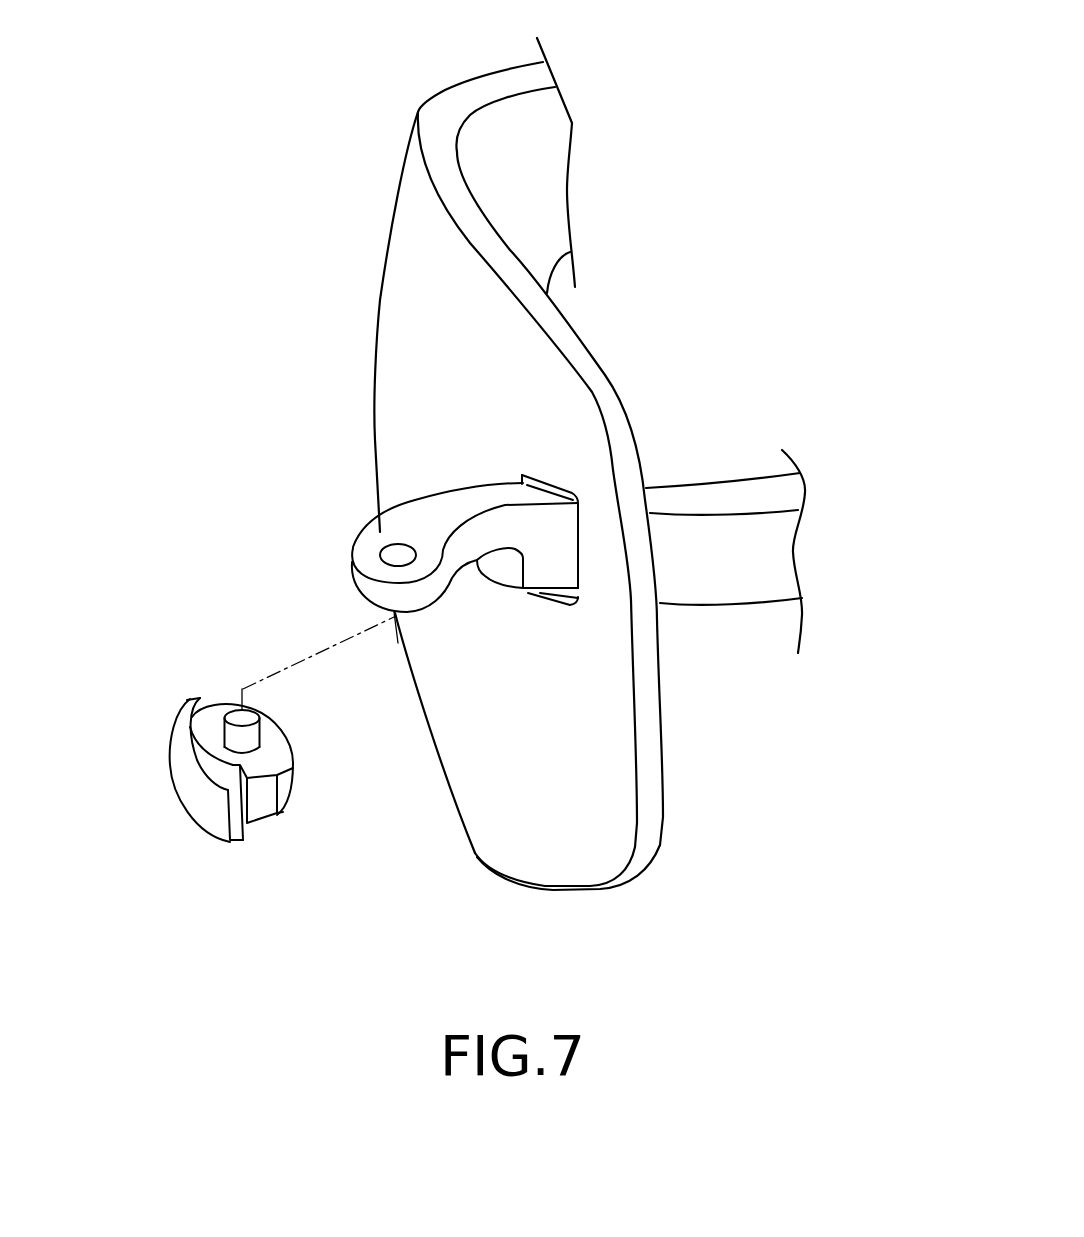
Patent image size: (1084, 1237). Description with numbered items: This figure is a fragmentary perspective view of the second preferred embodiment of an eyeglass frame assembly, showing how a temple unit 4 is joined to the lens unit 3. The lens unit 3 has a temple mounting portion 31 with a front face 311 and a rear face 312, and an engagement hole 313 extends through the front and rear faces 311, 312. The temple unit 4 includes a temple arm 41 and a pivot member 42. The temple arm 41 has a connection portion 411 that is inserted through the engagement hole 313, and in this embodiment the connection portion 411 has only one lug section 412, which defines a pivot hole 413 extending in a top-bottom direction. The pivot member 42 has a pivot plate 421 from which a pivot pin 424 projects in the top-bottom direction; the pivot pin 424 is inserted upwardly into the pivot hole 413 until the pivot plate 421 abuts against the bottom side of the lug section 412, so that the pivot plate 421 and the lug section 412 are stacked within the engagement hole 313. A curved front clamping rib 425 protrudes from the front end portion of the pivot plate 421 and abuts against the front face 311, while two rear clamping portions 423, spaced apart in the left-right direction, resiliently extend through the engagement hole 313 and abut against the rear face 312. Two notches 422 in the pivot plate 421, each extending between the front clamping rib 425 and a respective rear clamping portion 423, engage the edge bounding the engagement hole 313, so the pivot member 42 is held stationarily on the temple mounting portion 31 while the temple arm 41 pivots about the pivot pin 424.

The lens unit 3 is at (412, 98).
The temple mounting portion 31 is at (594, 366).
The front face 311 is at (377, 315).
The rear face 312 is at (625, 402).
The engagement hole 313 is at (593, 472).
The temple unit 4 is at (766, 609).
The temple arm 41 is at (782, 555).
The connection portion 411 is at (690, 585).
The lug section 412 is at (360, 578).
The pivot hole 413 is at (390, 556).
The pivot member 42 is at (247, 766).
The pivot plate 421 is at (270, 740).
The notch 422 is at (248, 787).
The rear clamping portion 423 is at (270, 785).
The pivot pin 424 is at (240, 712).
The front clamping rib 425 is at (178, 747).